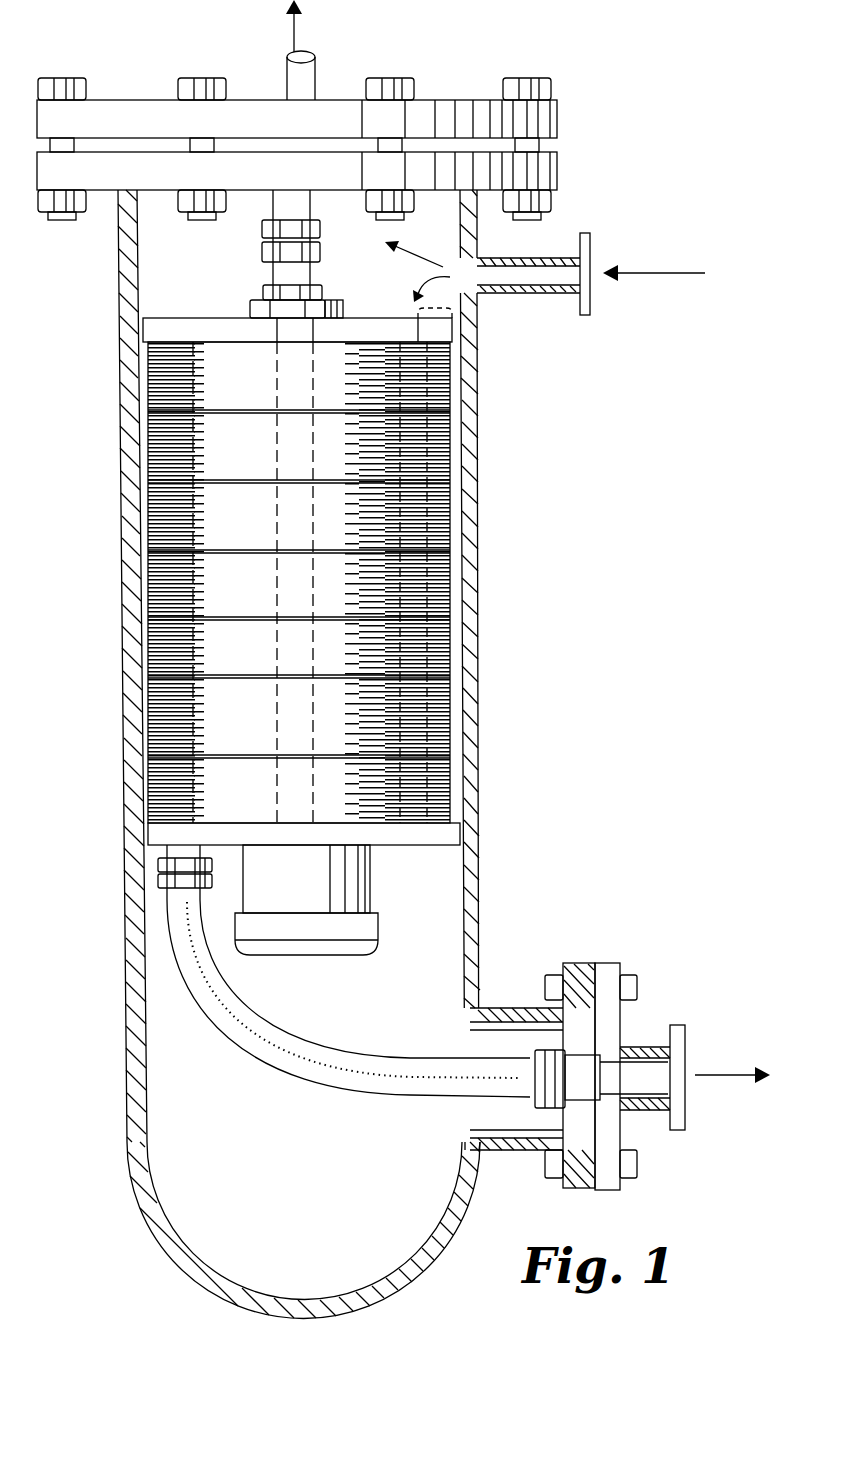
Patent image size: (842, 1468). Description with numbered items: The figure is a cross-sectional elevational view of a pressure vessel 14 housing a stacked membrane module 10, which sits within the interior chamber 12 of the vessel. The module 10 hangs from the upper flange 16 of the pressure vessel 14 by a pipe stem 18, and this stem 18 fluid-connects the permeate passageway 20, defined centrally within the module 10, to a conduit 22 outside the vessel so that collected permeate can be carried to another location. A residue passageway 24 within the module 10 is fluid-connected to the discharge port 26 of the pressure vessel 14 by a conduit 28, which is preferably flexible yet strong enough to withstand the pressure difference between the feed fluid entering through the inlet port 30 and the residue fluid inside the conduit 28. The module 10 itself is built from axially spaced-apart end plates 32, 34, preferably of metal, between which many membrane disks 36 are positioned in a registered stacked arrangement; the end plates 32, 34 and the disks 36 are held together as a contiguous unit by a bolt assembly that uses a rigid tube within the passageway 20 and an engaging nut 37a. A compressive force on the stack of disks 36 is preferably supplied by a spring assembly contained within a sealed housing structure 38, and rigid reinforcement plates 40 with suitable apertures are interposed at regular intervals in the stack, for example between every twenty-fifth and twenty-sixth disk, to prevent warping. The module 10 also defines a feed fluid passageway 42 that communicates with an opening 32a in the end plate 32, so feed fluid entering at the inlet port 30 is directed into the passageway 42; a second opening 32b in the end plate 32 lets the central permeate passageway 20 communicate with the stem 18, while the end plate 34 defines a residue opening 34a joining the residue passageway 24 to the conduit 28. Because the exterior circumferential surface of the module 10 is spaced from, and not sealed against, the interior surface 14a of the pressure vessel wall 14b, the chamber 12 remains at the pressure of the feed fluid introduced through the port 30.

The stacked membrane module 10 is at (272, 662).
The interior chamber 12 is at (295, 1174).
The pressure vessel 14 is at (110, 1138).
The interior surface 14a is at (140, 790).
The pressure vessel wall 14b is at (130, 462).
The upper flange 16 is at (442, 110).
The pipe stem 18 is at (285, 272).
The permeate passageway 20 is at (283, 385).
The conduit 22 is at (317, 80).
The residue passageway 24 is at (190, 578).
The discharge port 26 is at (648, 1047).
The conduit 28 is at (340, 1063).
The inlet port 30 is at (527, 258).
The end plate 32 is at (188, 327).
The opening 32a is at (462, 310).
The opening 32b is at (403, 297).
The end plate 34 is at (386, 833).
The residue opening 34a is at (140, 856).
The membrane disks 36 is at (150, 590).
The nut 37a is at (333, 300).
The sealed housing structure 38 is at (305, 889).
The rigid reinforcement plates 40 is at (150, 410).
The feed fluid passageway 42 is at (450, 428).